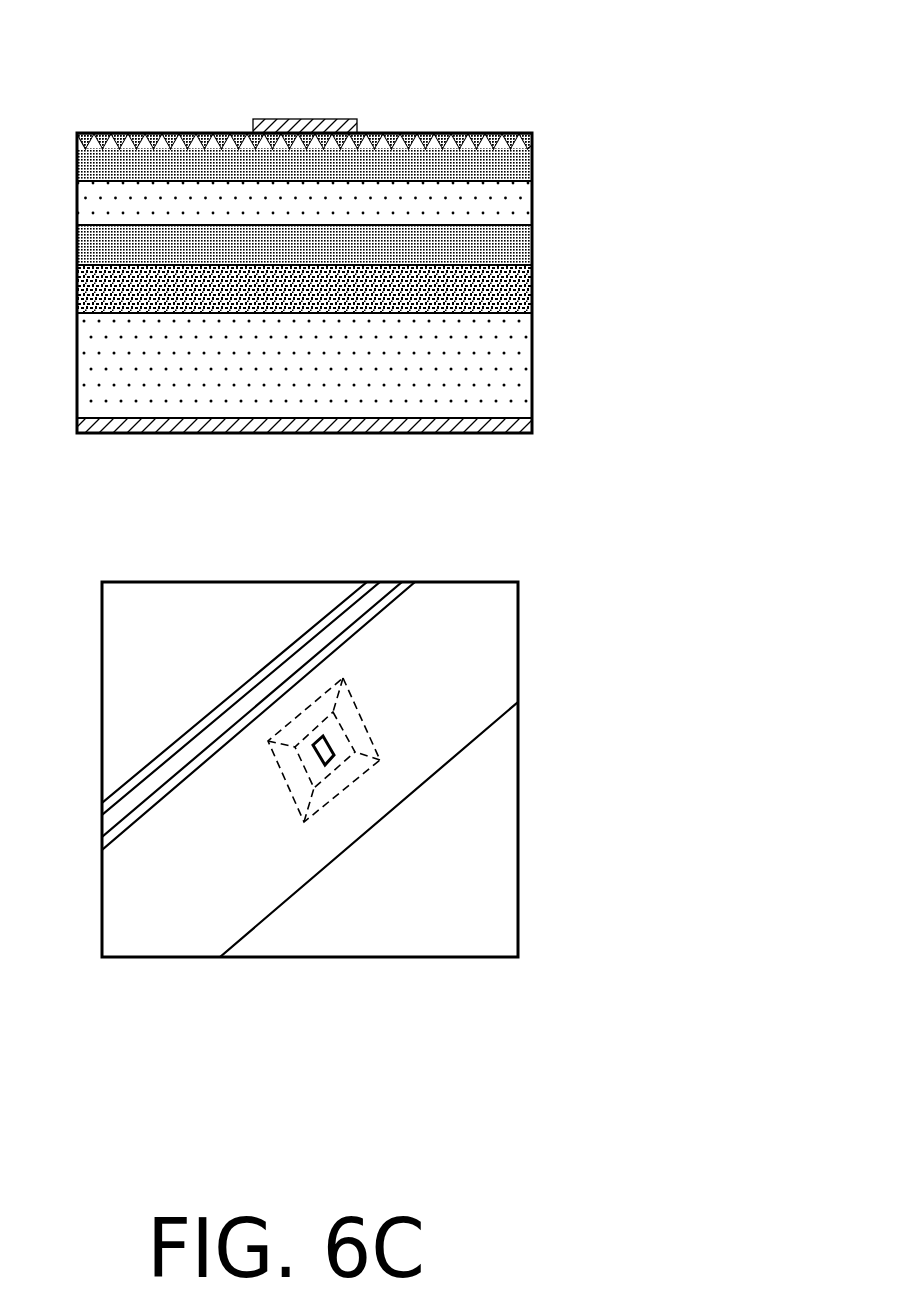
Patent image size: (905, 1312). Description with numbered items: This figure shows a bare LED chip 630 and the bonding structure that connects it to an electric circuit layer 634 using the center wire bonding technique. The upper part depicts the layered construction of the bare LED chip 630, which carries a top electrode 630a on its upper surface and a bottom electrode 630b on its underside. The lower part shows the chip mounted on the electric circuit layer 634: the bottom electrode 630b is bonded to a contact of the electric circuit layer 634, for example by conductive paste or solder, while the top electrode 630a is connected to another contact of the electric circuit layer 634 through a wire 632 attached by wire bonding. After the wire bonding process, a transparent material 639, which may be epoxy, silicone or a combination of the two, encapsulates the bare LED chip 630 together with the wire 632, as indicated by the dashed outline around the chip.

The bare LED chip 630 is at (403, 382).
The top electrode 630a is at (315, 118).
The bottom electrode 630b is at (533, 421).
The electric circuit layer 634 is at (443, 653).
The wire 632 is at (340, 782).
The transparent material 639 is at (335, 795).